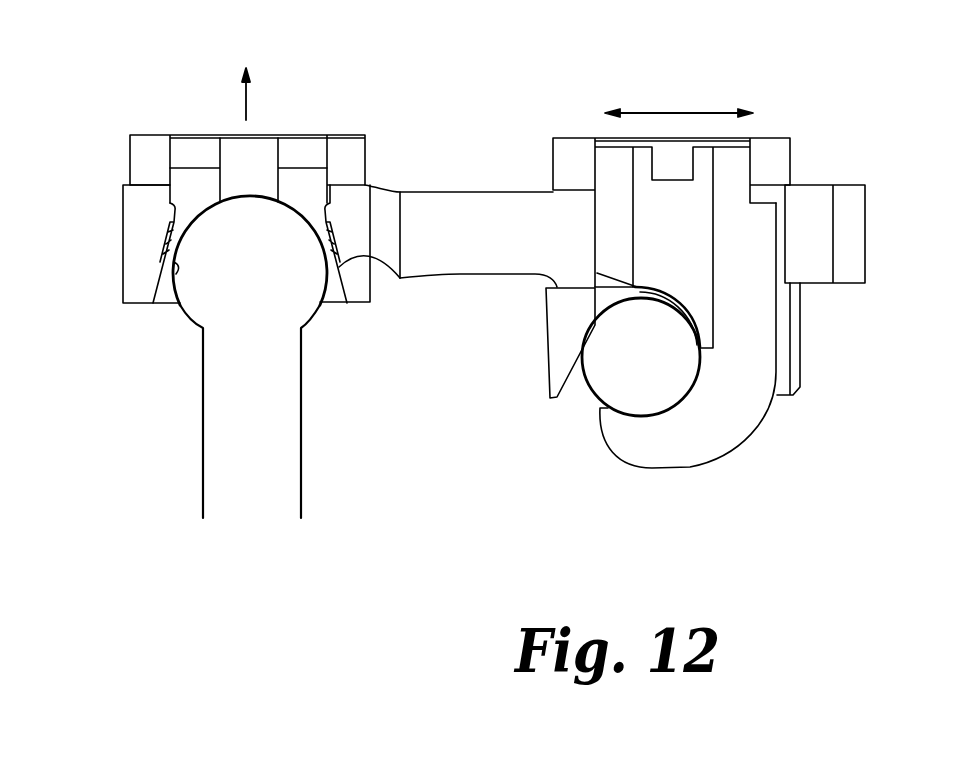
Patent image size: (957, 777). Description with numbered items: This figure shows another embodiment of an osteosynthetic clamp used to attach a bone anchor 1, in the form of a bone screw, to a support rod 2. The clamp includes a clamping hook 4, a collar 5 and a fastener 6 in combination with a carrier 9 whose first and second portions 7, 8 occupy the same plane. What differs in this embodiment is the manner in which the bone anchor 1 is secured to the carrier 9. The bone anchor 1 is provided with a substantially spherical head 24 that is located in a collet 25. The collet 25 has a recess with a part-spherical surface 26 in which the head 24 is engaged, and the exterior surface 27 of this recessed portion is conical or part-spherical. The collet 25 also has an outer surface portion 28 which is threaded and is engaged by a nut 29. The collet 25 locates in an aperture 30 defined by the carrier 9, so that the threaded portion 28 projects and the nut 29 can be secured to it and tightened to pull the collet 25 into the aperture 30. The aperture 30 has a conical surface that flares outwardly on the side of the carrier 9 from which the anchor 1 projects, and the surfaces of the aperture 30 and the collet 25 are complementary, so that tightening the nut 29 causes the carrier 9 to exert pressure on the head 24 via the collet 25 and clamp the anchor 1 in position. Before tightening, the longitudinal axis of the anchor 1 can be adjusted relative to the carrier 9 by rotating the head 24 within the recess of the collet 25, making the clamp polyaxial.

The bone anchor 1 is at (316, 447).
The support rod 2 is at (612, 375).
The clamping hook 4 is at (720, 422).
The collar 5 is at (793, 358).
The fastener 6 is at (780, 155).
The first portion 7 is at (138, 217).
The second portion 8 is at (848, 236).
The carrier 9 is at (480, 203).
The spherical head 24 is at (243, 232).
The collet 25 is at (300, 192).
The part-spherical surface 26 is at (173, 263).
The exterior surface 27 is at (400, 281).
The outer surface portion 28 is at (187, 150).
The nut 29 is at (137, 148).
The aperture 30 is at (337, 220).